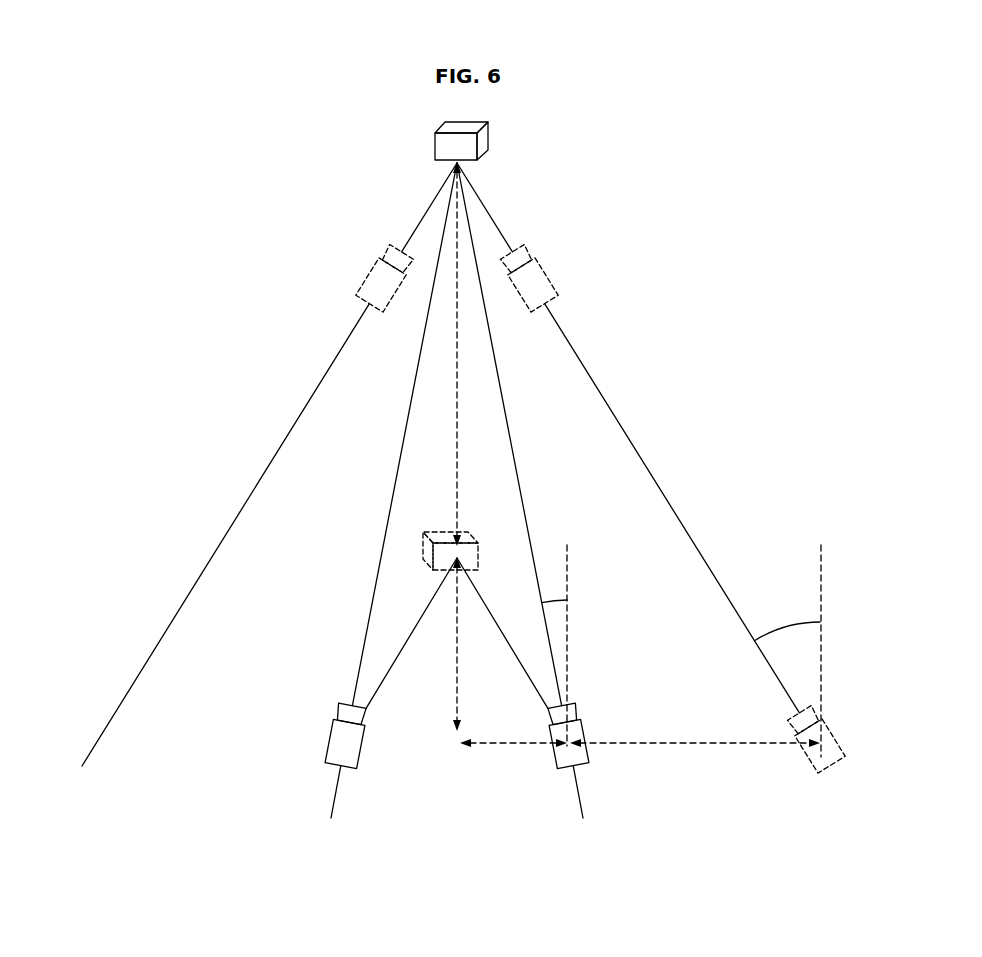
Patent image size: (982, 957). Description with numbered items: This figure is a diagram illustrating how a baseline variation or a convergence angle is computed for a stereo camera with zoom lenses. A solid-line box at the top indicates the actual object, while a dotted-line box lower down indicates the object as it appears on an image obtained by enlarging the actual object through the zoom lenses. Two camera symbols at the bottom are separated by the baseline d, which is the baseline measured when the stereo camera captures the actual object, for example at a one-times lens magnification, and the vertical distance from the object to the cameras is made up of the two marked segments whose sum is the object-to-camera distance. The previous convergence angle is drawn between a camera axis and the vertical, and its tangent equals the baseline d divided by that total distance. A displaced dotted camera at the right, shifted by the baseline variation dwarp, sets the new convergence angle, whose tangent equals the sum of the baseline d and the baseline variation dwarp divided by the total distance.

The baseline d is at (513, 759).
The baseline variation dwarp is at (695, 760).